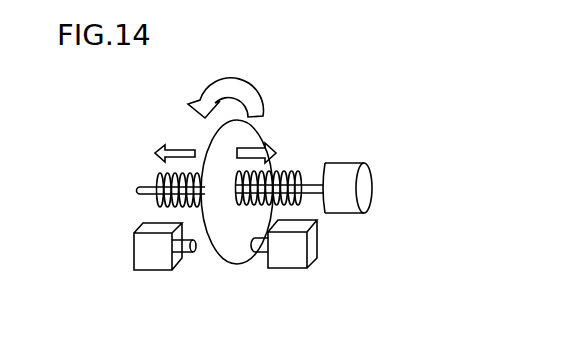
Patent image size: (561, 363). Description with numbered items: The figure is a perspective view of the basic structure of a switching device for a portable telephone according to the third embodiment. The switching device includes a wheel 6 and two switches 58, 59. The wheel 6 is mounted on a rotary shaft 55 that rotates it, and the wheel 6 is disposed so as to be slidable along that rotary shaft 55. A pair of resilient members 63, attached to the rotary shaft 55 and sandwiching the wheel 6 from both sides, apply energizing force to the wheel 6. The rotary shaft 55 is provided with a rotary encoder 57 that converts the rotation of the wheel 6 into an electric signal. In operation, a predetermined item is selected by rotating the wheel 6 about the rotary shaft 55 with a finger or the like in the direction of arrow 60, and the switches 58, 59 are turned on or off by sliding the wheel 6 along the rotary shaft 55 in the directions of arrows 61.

The wheel 6 is at (243, 135).
The rotary shaft 55 is at (313, 191).
The rotary encoder 57 is at (368, 188).
The switch 58 is at (285, 255).
The switch 59 is at (152, 258).
The arrow 60 is at (201, 98).
The arrows 61 is at (158, 148).
The resilient members 63 is at (158, 182).